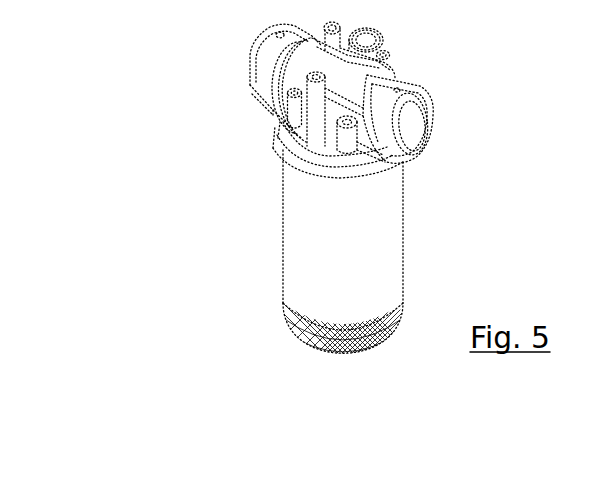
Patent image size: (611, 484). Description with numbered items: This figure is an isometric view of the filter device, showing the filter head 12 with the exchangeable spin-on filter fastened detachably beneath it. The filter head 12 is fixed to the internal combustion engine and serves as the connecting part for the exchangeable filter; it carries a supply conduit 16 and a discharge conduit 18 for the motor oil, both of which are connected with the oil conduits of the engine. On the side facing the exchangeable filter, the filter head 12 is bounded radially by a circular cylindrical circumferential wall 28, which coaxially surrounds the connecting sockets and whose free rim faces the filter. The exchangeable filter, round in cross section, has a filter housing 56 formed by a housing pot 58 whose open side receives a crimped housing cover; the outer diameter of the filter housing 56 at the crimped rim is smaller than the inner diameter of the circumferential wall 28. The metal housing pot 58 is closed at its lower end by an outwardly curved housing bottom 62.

The filter head 12 is at (394, 75).
The supply conduit 16 is at (428, 109).
The discharge conduit 18 is at (257, 60).
The circumferential wall 28 is at (276, 147).
The filter housing 56 is at (313, 265).
The housing pot 58 is at (300, 247).
The housing bottom 62 is at (300, 332).